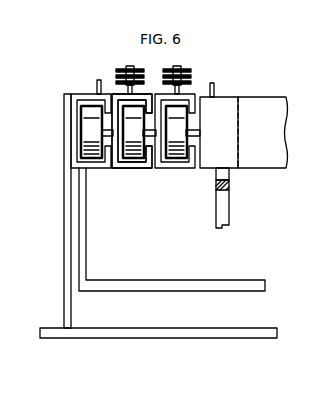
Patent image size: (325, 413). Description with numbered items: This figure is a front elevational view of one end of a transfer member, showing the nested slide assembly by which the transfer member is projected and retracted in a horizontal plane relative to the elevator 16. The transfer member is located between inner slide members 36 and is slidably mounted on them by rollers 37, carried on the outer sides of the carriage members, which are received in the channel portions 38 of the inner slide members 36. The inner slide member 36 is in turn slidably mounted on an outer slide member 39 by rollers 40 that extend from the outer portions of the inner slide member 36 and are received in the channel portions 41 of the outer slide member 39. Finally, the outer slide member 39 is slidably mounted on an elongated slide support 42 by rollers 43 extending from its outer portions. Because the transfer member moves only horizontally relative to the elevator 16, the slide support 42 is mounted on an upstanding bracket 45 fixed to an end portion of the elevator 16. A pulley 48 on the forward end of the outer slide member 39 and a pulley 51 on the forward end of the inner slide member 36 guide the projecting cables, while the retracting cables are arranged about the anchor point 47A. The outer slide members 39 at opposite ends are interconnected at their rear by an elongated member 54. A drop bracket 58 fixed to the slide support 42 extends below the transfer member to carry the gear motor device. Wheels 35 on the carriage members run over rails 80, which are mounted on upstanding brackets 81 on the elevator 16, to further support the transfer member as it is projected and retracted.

The elevator 16 is at (211, 333).
The wheels 35 is at (230, 184).
The inner slide member 36 is at (176, 169).
The rollers 37 is at (176, 130).
The channel portions 38 is at (192, 100).
The outer slide member 39 is at (134, 168).
The rollers 40 is at (168, 170).
The channel portions 41 is at (82, 165).
The slide support 42 is at (95, 168).
The rollers 43 is at (84, 128).
The upstanding brackets 45 is at (63, 248).
The anchor point 47A is at (97, 88).
The pulley 48 is at (120, 70).
The pulley 51 is at (188, 72).
The elongated member 54 is at (262, 105).
The drop bracket 58 is at (158, 282).
The rails 80 is at (216, 190).
The upstanding brackets 81 is at (230, 214).